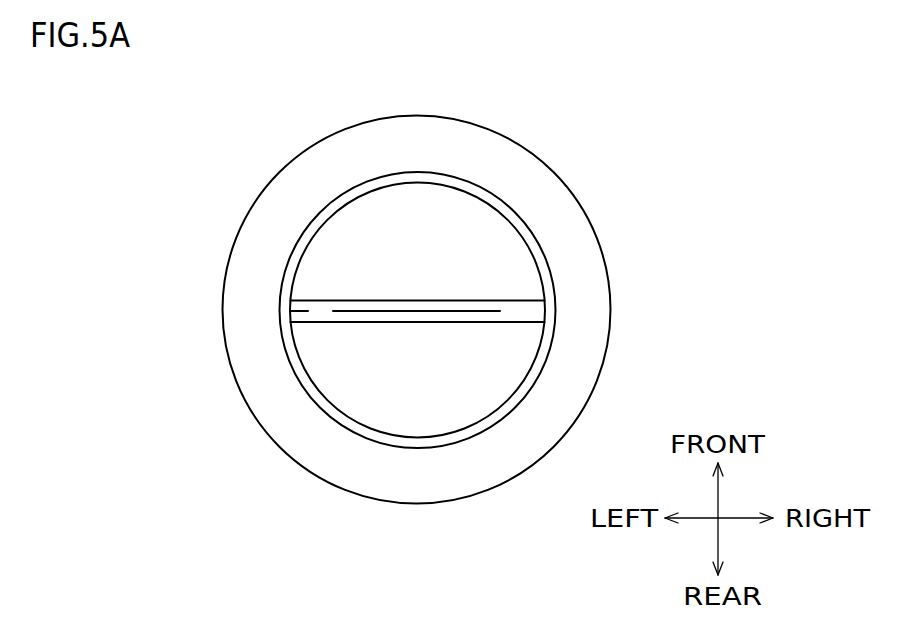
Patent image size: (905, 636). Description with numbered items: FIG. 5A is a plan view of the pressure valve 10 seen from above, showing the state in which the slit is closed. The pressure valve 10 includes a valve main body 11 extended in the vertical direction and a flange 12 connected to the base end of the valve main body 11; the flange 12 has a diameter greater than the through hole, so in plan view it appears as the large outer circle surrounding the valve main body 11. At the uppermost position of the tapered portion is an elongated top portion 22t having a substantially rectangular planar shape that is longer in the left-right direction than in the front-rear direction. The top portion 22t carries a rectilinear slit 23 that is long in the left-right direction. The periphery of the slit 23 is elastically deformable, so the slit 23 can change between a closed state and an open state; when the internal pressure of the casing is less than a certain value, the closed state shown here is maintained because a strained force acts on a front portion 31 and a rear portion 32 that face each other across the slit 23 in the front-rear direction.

The pressure valve 10 is at (533, 105).
The valve main body 11 is at (320, 228).
The flange 12 is at (575, 193).
The top portion 22t is at (300, 311).
The slit 23 is at (475, 300).
The front portion 31 is at (418, 302).
The rear portion 32 is at (418, 322).